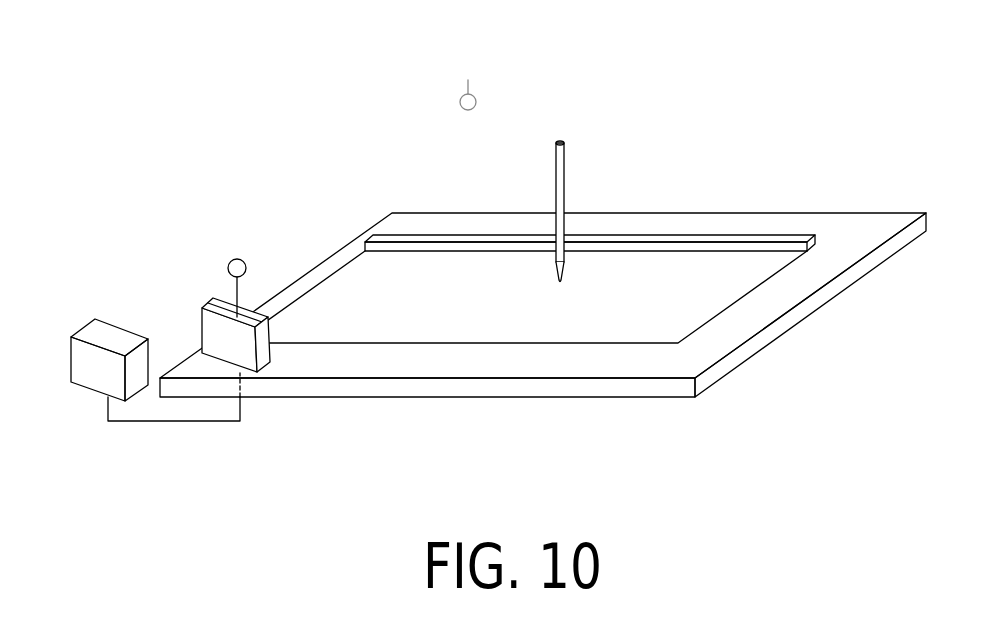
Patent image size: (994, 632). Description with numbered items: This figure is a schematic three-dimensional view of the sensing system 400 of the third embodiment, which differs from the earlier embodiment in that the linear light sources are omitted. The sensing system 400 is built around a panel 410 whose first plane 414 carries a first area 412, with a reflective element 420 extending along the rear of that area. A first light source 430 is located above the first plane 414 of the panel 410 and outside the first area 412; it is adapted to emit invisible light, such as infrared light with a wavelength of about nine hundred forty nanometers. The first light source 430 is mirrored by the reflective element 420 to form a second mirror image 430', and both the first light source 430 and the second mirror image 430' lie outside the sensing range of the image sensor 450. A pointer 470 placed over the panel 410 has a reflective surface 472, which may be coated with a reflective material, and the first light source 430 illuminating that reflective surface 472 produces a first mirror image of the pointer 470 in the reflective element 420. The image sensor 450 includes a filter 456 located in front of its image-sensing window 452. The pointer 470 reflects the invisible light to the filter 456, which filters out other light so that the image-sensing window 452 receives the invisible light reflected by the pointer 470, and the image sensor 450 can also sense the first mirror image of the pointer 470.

The sensing system 400 is at (832, 444).
The panel 410 is at (543, 291).
The first area 412 is at (549, 312).
The first plane 414 is at (832, 253).
The reflective element 420 is at (722, 237).
The first light source 430 is at (214, 241).
The second mirror image 430' is at (487, 58).
The image sensor 450 is at (200, 306).
The image-sensing window 452 is at (265, 349).
The filter 456 is at (282, 320).
The pointer 470 is at (604, 179).
The reflective surface 472 is at (562, 262).